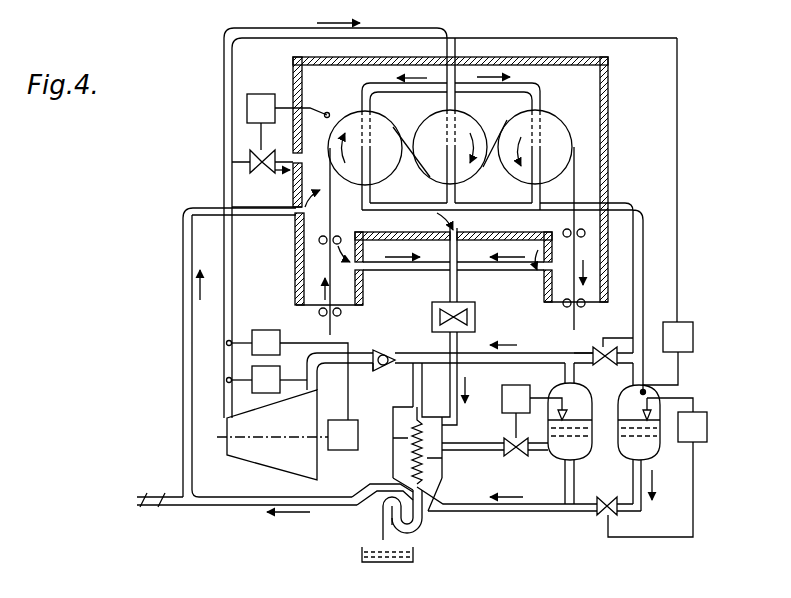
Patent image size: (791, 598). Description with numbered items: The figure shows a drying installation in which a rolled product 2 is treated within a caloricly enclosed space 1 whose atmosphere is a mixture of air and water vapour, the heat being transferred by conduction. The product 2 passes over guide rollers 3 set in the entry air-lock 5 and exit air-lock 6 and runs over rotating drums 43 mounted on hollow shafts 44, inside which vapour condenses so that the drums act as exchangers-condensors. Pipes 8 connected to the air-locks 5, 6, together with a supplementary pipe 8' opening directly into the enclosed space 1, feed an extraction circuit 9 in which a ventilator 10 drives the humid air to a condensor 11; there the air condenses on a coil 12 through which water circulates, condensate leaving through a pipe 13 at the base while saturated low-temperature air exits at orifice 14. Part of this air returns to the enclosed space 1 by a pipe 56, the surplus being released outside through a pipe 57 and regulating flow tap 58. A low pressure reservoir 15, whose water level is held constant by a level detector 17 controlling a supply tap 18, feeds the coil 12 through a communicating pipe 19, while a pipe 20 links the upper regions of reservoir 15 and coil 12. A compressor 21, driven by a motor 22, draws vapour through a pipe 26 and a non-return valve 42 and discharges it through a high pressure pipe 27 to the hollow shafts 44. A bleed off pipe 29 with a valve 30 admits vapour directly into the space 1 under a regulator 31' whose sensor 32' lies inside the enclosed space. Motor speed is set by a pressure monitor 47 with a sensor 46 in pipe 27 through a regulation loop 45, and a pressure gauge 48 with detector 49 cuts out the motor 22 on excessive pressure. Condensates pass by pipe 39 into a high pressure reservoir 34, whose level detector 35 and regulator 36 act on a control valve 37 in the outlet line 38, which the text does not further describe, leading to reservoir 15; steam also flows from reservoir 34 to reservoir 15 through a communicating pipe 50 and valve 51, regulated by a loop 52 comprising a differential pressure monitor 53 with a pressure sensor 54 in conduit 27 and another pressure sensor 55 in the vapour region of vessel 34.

The enclosed space 1 is at (608, 104).
The rolled product 2 is at (331, 197).
The guide rollers 3 is at (340, 237).
The entry air-lock 5 is at (297, 287).
The exit air-lock 6 is at (548, 305).
The extraction pipes 8 is at (453, 270).
The supplementary pipe 8' is at (464, 257).
The extraction circuit 9 is at (455, 405).
The ventilator 10 is at (476, 320).
The condensor 11 is at (437, 438).
The evaporator coil 12 is at (428, 458).
The condensate pipe 13 is at (422, 522).
The orifice 14 is at (373, 490).
The low pressure reservoir 15 is at (568, 394).
The level detector 17 is at (512, 400).
The supply tap 18 is at (512, 452).
The communicating pipe 19 is at (490, 508).
The pipe 20 is at (552, 344).
The compressor 21 is at (240, 448).
The motor 22 is at (338, 445).
The pipe 26 is at (364, 365).
The high pressure pipe 27 is at (225, 233).
The bleed off pipe 29 is at (248, 157).
The valve 30 is at (272, 174).
The regulator 31' is at (261, 90).
The sensor 32' is at (316, 93).
The high pressure reservoir 34 is at (628, 403).
The level detector 35 is at (652, 414).
The regulator 36 is at (692, 428).
The control valve 37 is at (607, 497).
The conduit 38 is at (566, 508).
The pipe 39 is at (643, 240).
The non-return valve 42 is at (390, 342).
The rotating drums 43 is at (388, 133).
The hollow shafts 44 is at (380, 170).
The regulation loop 45 is at (335, 390).
The pressure sensor 46 is at (228, 382).
The pressure monitor 47 is at (252, 378).
The pressure gauge 48 is at (266, 330).
The pressure detector 49 is at (227, 343).
The communicating pipe 50 is at (588, 352).
The valve 51 is at (612, 350).
The regulation loop 52 is at (680, 167).
The differential pressure monitor 53 is at (688, 328).
The pressure sensor 54 is at (453, 40).
The pressure sensor 55 is at (655, 380).
The pipe 56 is at (183, 300).
The pipe 57 is at (143, 495).
The regulating flow tap 58 is at (159, 508).